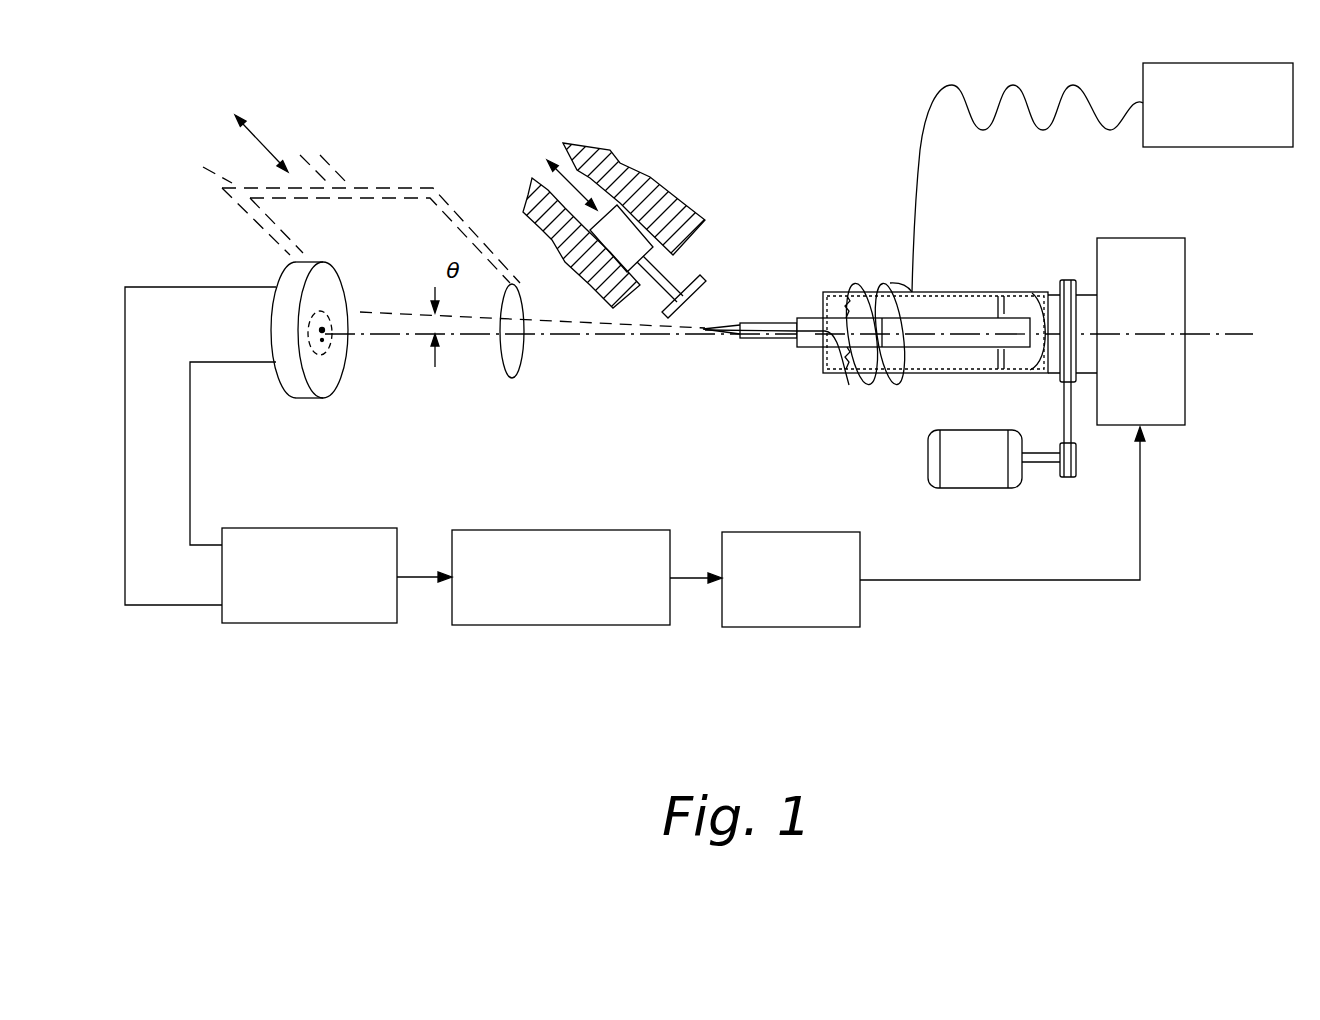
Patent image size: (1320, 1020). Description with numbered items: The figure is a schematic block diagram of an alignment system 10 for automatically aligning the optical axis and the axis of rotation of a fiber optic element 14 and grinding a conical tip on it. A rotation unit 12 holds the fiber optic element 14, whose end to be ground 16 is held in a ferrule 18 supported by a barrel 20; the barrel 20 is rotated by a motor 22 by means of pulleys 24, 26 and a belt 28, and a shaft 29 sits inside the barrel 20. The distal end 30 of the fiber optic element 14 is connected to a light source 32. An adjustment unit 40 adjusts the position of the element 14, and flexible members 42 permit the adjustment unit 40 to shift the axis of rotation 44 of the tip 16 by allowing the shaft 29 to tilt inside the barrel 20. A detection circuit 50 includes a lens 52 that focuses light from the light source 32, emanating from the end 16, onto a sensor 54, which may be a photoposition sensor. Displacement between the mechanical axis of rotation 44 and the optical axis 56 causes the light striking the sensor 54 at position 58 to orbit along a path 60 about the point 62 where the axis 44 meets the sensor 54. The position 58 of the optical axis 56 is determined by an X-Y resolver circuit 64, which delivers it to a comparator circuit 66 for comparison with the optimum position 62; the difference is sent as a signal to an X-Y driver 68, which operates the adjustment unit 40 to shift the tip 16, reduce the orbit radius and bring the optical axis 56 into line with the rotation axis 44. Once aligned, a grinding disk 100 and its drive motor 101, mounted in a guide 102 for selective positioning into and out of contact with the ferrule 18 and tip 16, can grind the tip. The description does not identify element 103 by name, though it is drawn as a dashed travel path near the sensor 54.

The alignment system 10 is at (421, 86).
The rotation unit 12 is at (888, 177).
The fiber optic element 14 is at (918, 193).
The end to be ground 16 is at (704, 327).
The ferrule 18 is at (762, 345).
The barrel 20 is at (953, 292).
The motor 22 is at (985, 488).
The pulley 24 is at (1077, 475).
The pulley 26 is at (1063, 283).
The belt 28 is at (1061, 404).
The shaft 29 is at (880, 293).
The distal end 30 is at (1141, 103).
The light source 32 is at (1252, 148).
The adjustment unit 40 is at (1187, 273).
The flexible members 42 is at (858, 360).
The axis of rotation 44 is at (415, 336).
The detection circuit 50 is at (361, 425).
The lens 52 is at (502, 352).
The sensor 54 is at (305, 262).
The optical axis 56 is at (398, 313).
The position of optical axis on sensor 58 is at (320, 312).
The path 60 is at (313, 320).
The point 62 is at (322, 338).
The X-Y resolver circuit 64 is at (327, 625).
The comparator circuit 66 is at (545, 627).
The X-Y driver 68 is at (792, 628).
The grinding disk 100 is at (703, 281).
The drive motor 101 is at (627, 230).
The guide 102 is at (597, 168).
The probe travel path 103 is at (203, 167).